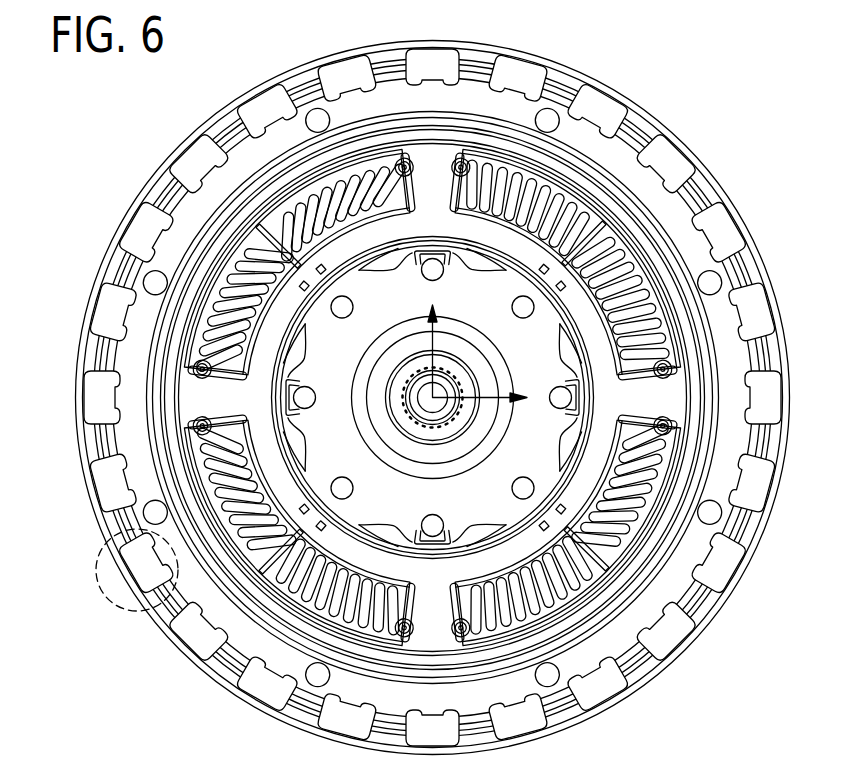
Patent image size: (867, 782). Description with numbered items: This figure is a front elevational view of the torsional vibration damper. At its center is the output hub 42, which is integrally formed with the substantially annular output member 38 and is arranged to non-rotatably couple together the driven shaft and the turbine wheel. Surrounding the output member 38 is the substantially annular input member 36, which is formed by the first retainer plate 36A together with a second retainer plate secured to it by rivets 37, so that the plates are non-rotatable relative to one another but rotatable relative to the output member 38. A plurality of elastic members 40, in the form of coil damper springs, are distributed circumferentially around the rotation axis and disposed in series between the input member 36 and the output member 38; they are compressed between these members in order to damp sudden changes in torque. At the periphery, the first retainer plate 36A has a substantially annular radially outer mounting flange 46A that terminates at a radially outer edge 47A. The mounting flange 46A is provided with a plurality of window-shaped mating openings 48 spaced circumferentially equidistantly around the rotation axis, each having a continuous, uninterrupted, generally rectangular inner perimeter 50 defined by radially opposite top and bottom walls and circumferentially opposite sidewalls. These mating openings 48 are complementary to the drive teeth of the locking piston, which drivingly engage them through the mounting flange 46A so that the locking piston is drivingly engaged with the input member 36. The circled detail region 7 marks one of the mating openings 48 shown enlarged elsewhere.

The detail region 7 is at (113, 603).
The input member 36 is at (648, 97).
The first retainer plate 36A is at (207, 397).
The rivets 37 is at (708, 506).
The output member 38 is at (487, 309).
The elastic members 40 is at (611, 258).
The output hub 42 is at (433, 442).
The radially outer mounting flange 46A is at (612, 643).
The radially outer edge 47A is at (573, 728).
The mating openings 48 is at (510, 72).
The inner perimeter 50 is at (716, 220).